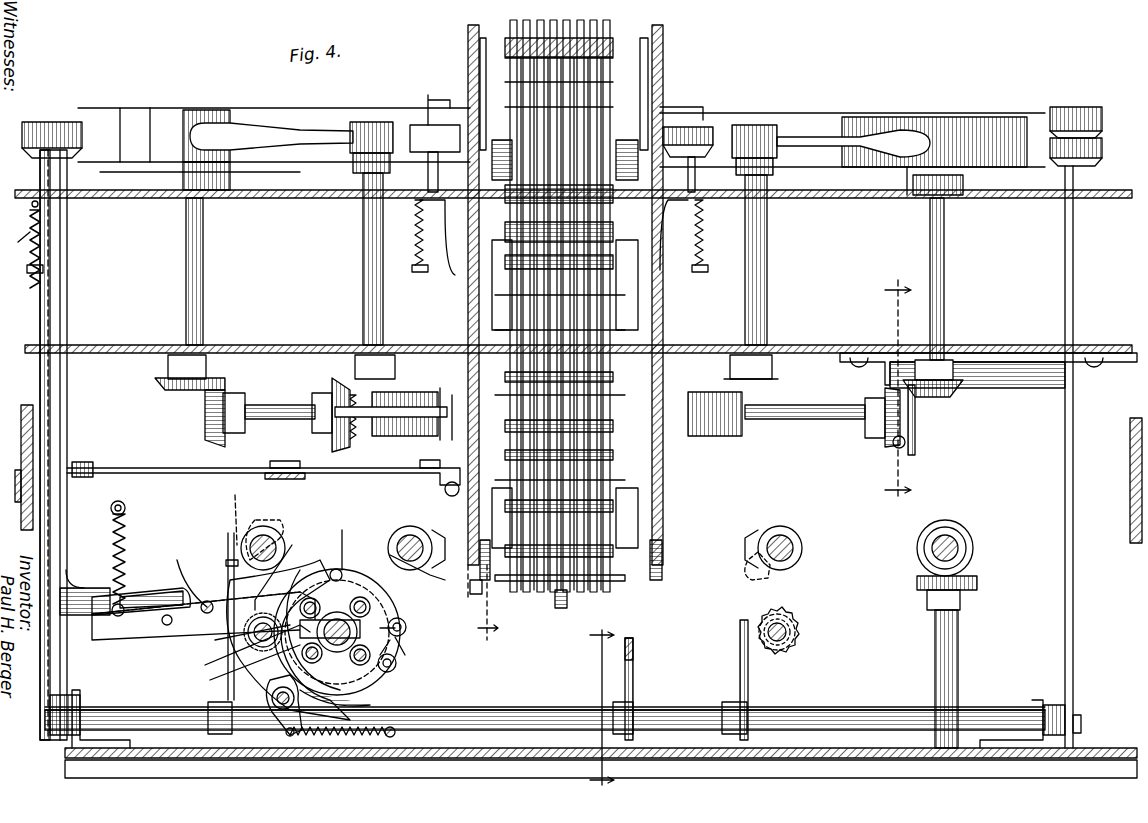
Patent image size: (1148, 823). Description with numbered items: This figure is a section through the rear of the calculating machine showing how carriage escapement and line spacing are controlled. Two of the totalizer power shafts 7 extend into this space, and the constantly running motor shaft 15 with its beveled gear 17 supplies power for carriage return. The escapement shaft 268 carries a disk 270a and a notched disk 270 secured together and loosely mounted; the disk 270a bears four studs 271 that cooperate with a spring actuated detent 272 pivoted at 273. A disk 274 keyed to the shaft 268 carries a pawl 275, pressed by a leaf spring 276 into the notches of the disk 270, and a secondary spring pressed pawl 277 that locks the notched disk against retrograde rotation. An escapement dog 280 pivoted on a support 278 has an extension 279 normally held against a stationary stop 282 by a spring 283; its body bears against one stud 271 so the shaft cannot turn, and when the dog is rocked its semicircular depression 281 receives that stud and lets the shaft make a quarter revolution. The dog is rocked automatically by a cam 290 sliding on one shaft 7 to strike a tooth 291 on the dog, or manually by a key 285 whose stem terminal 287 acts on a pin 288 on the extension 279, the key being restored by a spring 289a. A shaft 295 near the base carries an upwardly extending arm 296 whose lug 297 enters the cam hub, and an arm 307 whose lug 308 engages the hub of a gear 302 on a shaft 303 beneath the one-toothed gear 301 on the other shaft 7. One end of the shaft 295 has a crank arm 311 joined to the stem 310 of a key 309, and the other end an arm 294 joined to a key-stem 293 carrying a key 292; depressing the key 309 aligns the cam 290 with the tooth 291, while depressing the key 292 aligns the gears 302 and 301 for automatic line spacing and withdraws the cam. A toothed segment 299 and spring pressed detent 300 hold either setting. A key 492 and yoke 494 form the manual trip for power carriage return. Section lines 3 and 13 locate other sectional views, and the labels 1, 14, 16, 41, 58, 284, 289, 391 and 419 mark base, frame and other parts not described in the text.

The base plate 1 is at (488, 768).
The section line 3— 3 is at (599, 708).
The totalizer power shaft 7 is at (260, 548).
The section line 13— 13 is at (535, 395).
The bearing 14 is at (946, 548).
The motor shaft 15 is at (968, 645).
The bearing flange 16 is at (917, 550).
The beveled gear 17 is at (990, 572).
The disk stack / section line 41 is at (478, 40).
The frame strip 58 is at (16, 469).
The shaft 268 is at (345, 640).
The notched disk 270 is at (380, 600).
The disk 270a is at (410, 634).
The stud 271 is at (310, 608).
The spring actuated detent 272 is at (342, 751).
The pivot 273 is at (276, 712).
The disk 274 is at (405, 625).
The pawl 275 is at (349, 538).
The leaf spring 276 is at (433, 572).
The secondary spring pressed pawl 277 is at (372, 700).
The support 278 is at (240, 652).
The extension 279 is at (222, 640).
The escapement dog 280 is at (240, 598).
The semicircular depression 281 is at (237, 670).
The stationary stop 282 is at (124, 578).
The spring 283 is at (150, 532).
The arm 284 is at (289, 564).
The key 285 is at (71, 138).
The terminal 287 is at (158, 584).
The pin 288 is at (62, 300).
The spring 289 is at (50, 230).
The spring 289a is at (21, 243).
The cam 290 is at (272, 530).
The tooth 291 is at (262, 617).
The key 292 is at (1105, 150).
The key-stem 293 is at (1066, 262).
The arm 294 is at (1050, 697).
The shaft 295 is at (878, 690).
The upwardly extending arm 296 is at (228, 548).
The lug 297 is at (233, 511).
The toothed segment 299 is at (627, 683).
The spring pressed detent 300 is at (634, 645).
The one-toothed gear 301 is at (756, 535).
The gear 302 is at (796, 617).
The shaft 303 is at (790, 632).
The arm 307 is at (740, 675).
The lug 308 is at (755, 625).
The key 309 is at (18, 150).
The stem 310 is at (52, 655).
The crank arm 311 is at (68, 678).
The post 391 is at (745, 125).
The frame bar 419 is at (300, 136).
The key 492 is at (1065, 110).
The yoke 494 is at (1030, 392).